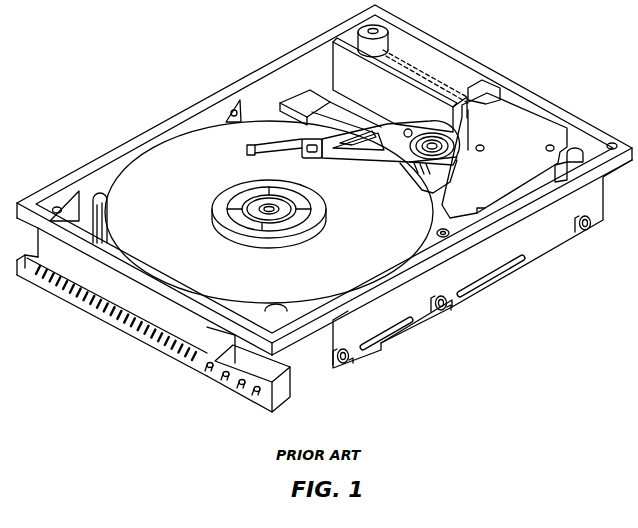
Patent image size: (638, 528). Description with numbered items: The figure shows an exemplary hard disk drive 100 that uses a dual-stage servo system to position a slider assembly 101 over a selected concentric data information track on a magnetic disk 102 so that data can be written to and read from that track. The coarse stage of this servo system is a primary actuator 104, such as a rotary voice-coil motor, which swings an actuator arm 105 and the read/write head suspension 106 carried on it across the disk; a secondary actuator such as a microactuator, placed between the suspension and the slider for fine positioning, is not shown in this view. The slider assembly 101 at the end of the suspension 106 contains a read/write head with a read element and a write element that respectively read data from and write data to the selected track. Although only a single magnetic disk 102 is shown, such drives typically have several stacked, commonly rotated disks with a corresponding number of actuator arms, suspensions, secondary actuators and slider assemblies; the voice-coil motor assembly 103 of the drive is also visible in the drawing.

The hard disk drive 100 is at (145, 50).
The slider assembly 101 is at (250, 145).
The magnetic disk 102 is at (166, 167).
The voice coil motor 103 is at (390, 85).
The primary actuator 104 is at (520, 116).
The actuator arm 105 is at (350, 155).
The read/write head suspension 106 is at (287, 147).